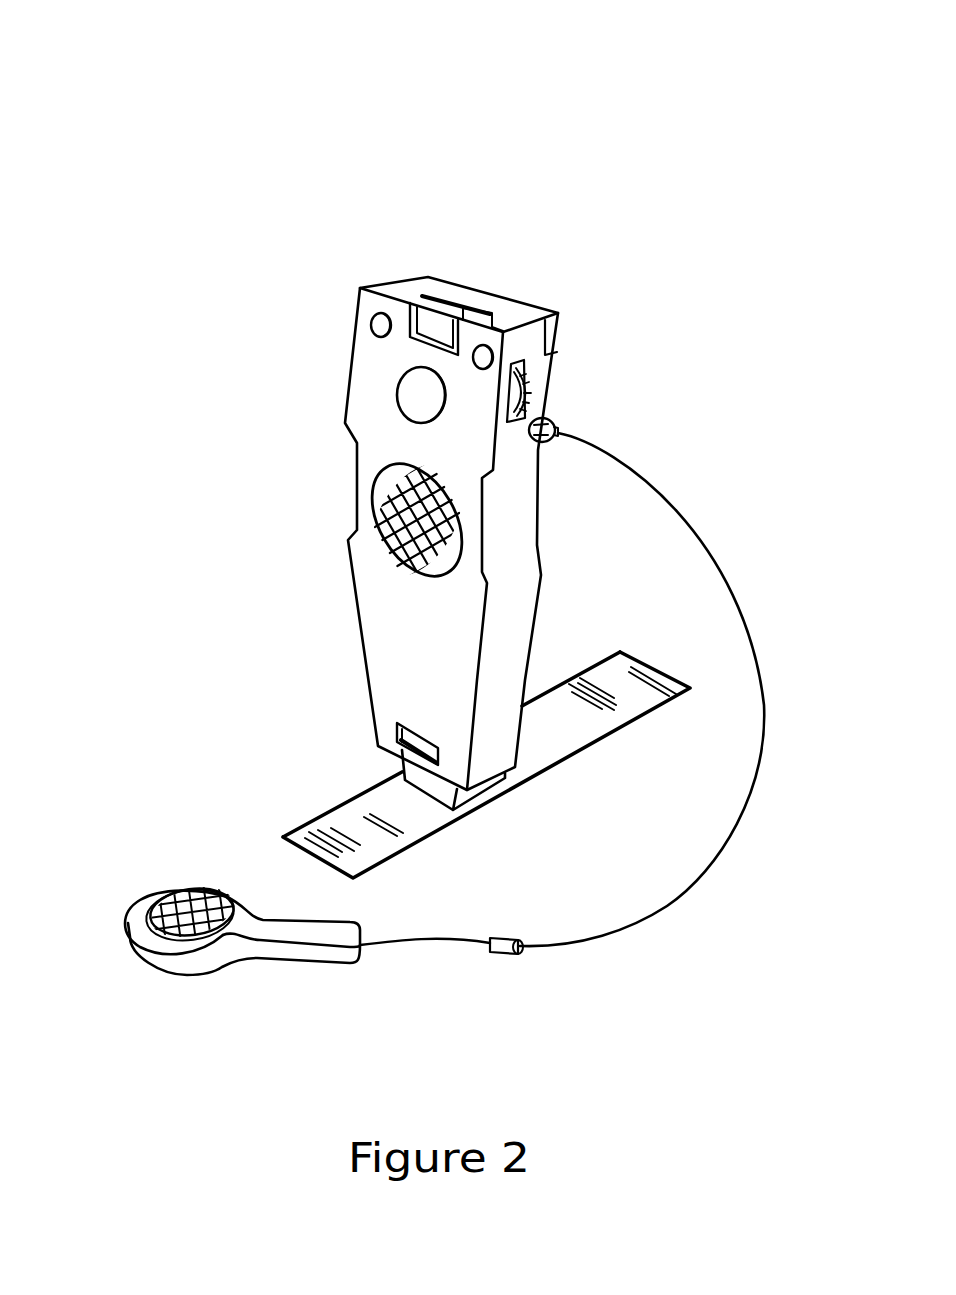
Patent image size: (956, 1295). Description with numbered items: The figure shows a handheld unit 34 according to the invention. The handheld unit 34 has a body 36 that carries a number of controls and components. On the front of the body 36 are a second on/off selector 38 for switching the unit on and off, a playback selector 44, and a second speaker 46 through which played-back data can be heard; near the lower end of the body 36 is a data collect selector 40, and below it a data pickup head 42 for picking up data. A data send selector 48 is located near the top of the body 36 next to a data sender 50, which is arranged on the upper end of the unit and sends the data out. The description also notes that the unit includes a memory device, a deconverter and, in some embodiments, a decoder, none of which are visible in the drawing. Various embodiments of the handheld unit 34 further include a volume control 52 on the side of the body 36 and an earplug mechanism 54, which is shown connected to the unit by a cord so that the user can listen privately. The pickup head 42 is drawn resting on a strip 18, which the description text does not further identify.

The handheld unit 34 is at (538, 143).
The body 36 is at (393, 600).
The second on/off selector 38 is at (371, 323).
The data collect selector 40 is at (398, 746).
The data pickup head 42 is at (420, 782).
The playback selector 44 is at (407, 390).
The second speaker 46 is at (375, 507).
The data send selector 48 is at (478, 342).
The data sender 50 is at (440, 310).
The volume control 52 is at (526, 380).
The earplug mechanism 54 is at (173, 892).
The card strip 18 is at (420, 820).